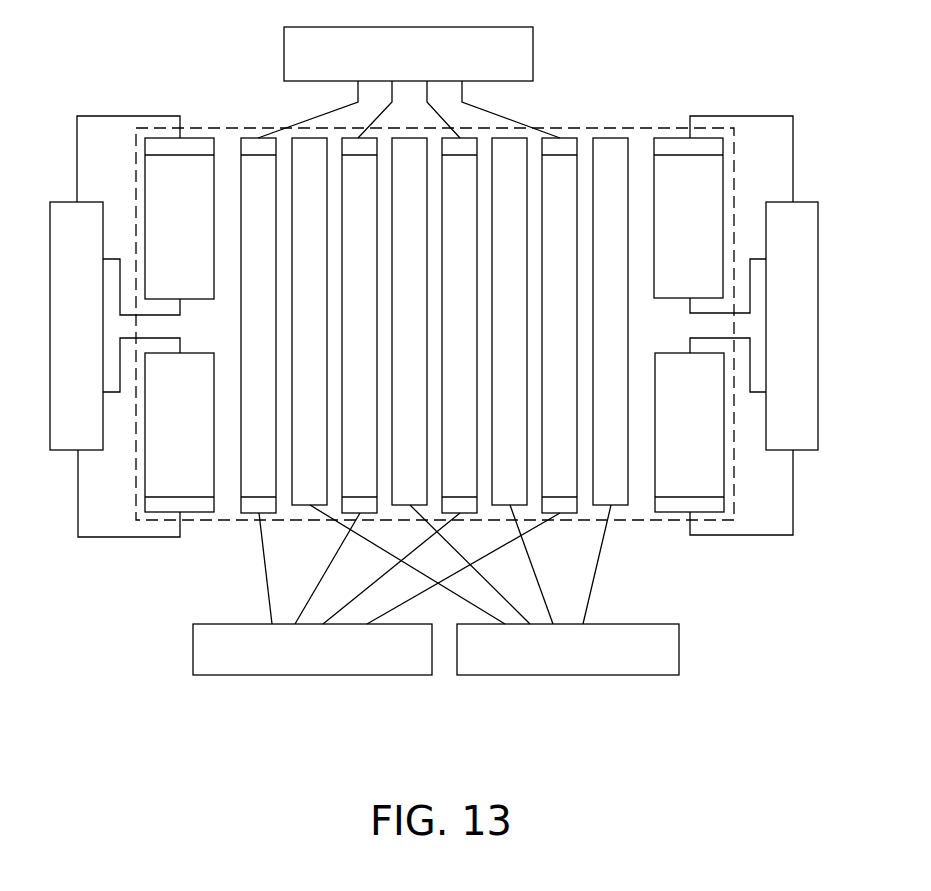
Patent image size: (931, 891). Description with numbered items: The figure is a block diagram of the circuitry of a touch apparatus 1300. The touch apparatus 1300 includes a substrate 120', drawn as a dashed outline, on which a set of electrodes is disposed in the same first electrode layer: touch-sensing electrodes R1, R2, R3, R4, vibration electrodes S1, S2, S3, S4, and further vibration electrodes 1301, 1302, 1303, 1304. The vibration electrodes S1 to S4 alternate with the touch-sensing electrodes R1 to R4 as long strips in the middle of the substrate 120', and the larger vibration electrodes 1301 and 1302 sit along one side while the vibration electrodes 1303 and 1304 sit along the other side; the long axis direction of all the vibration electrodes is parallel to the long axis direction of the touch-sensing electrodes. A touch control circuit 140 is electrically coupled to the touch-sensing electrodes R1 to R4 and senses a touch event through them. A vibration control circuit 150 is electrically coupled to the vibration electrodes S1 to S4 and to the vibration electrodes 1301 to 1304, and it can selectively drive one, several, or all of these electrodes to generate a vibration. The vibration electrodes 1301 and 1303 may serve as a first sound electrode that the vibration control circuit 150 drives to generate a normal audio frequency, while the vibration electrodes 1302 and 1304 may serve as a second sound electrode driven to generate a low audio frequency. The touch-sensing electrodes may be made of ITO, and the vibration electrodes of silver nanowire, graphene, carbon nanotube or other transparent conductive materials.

The vibration control circuit 150 is at (533, 55).
The touch control circuit 140 is at (558, 675).
The substrate 120' is at (435, 289).
The vibration electrode 1301 is at (145, 215).
The vibration electrode 1302 is at (146, 437).
The vibration electrode 1303 is at (723, 214).
The vibration electrode 1304 is at (724, 436).
The touch apparatus 1300 is at (727, 713).
The vibration electrode S1 is at (299, 352).
The vibration electrode S2 is at (343, 352).
The vibration electrode S3 is at (400, 352).
The vibration electrode S4 is at (472, 352).
The touch-sensing electrode R1 is at (398, 381).
The touch-sensing electrode R2 is at (461, 381).
The touch-sensing electrode R3 is at (522, 381).
The touch-sensing electrode R4 is at (605, 381).